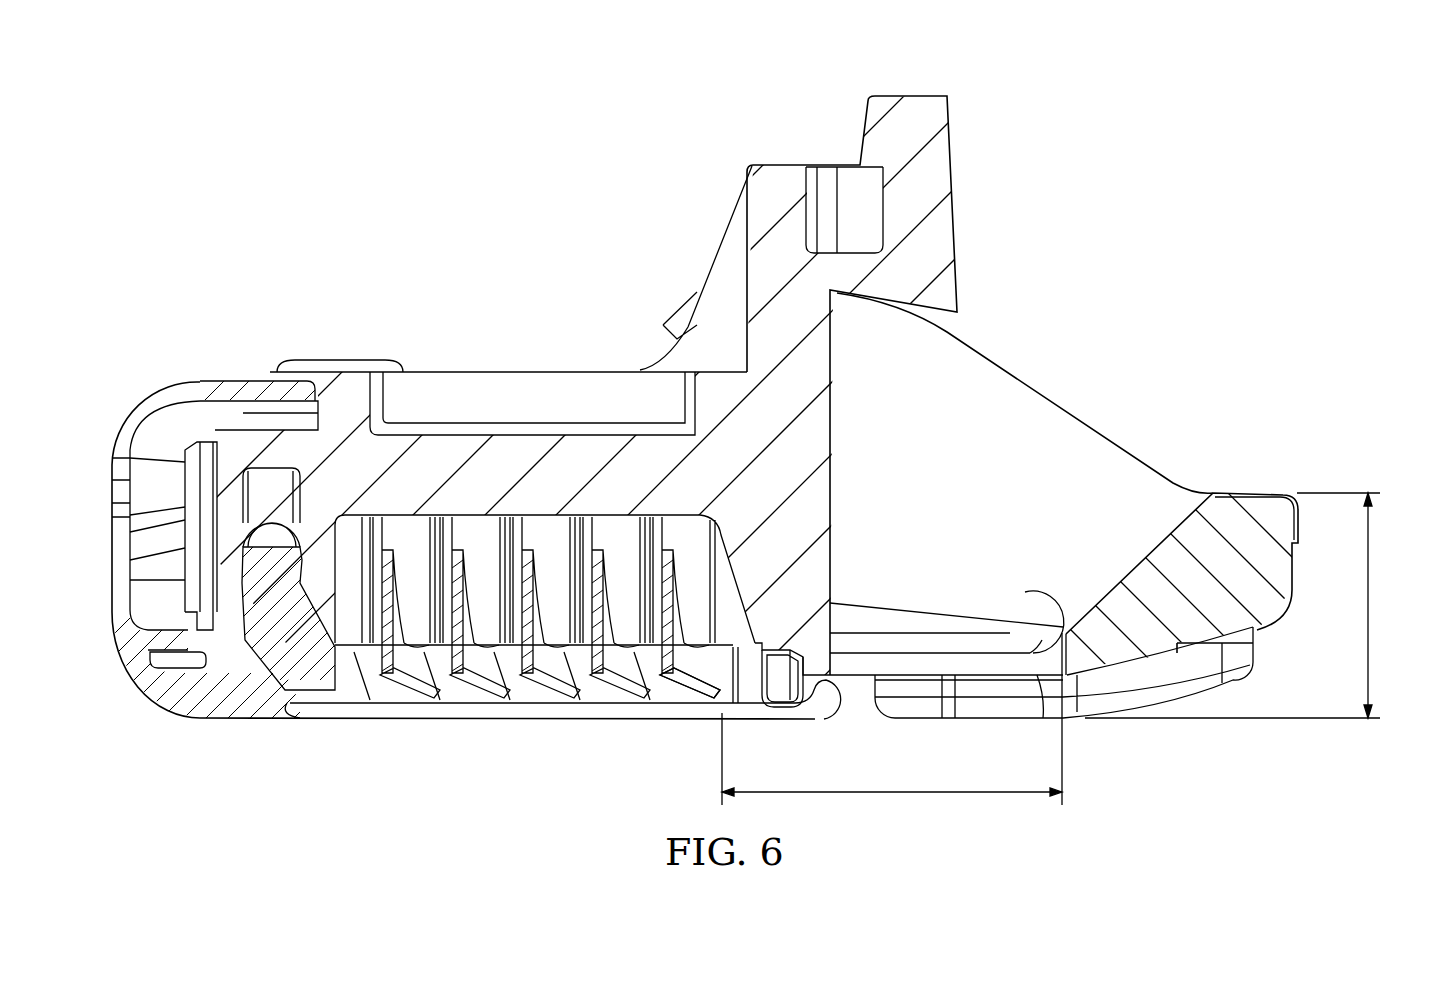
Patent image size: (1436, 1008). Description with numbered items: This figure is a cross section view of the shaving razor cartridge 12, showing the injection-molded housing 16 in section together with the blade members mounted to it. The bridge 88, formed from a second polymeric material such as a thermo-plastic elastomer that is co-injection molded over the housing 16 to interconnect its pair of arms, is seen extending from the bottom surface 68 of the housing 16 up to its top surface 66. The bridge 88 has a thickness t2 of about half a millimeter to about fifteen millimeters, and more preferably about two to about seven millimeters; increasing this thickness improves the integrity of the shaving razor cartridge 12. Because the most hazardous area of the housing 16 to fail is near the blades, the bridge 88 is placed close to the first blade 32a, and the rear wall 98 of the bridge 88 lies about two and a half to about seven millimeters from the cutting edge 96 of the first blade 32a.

The shaving razor cartridge 12 is at (228, 126).
The housing 16 is at (632, 326).
The first blade 32a is at (678, 698).
The cutting edge 96 is at (720, 703).
The bottom surface 68 is at (1229, 470).
The bridge 88 is at (1279, 568).
The rear wall 98 is at (1040, 592).
The top surface 66 is at (1140, 728).